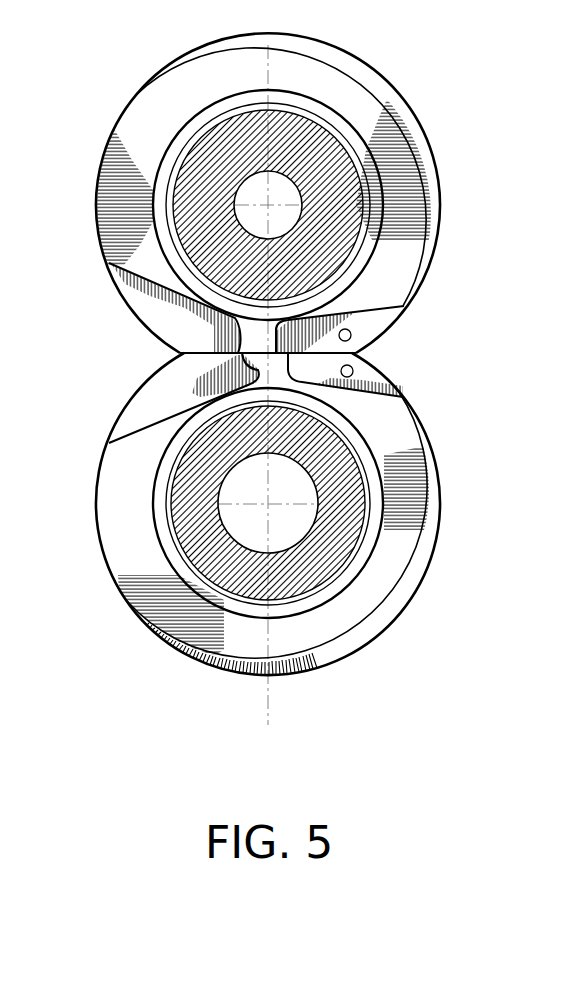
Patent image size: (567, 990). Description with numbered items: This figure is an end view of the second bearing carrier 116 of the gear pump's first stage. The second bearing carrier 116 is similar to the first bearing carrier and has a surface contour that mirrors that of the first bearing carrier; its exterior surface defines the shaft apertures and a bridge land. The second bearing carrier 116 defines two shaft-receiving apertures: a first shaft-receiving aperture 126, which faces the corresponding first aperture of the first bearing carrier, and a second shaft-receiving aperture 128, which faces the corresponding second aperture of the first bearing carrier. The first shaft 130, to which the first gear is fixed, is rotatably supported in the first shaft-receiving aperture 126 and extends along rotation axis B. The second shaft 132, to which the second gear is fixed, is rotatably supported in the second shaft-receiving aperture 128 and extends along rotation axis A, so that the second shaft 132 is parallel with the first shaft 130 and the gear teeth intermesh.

The second bearing carrier 116 is at (158, 663).
The first shaft-receiving aperture 126 is at (152, 250).
The second shaft-receiving aperture 128 is at (146, 520).
The first shaft 130 is at (343, 182).
The second shaft 132 is at (343, 543).
The first rotation axis A is at (268, 503).
The second rotation axis B is at (268, 205).